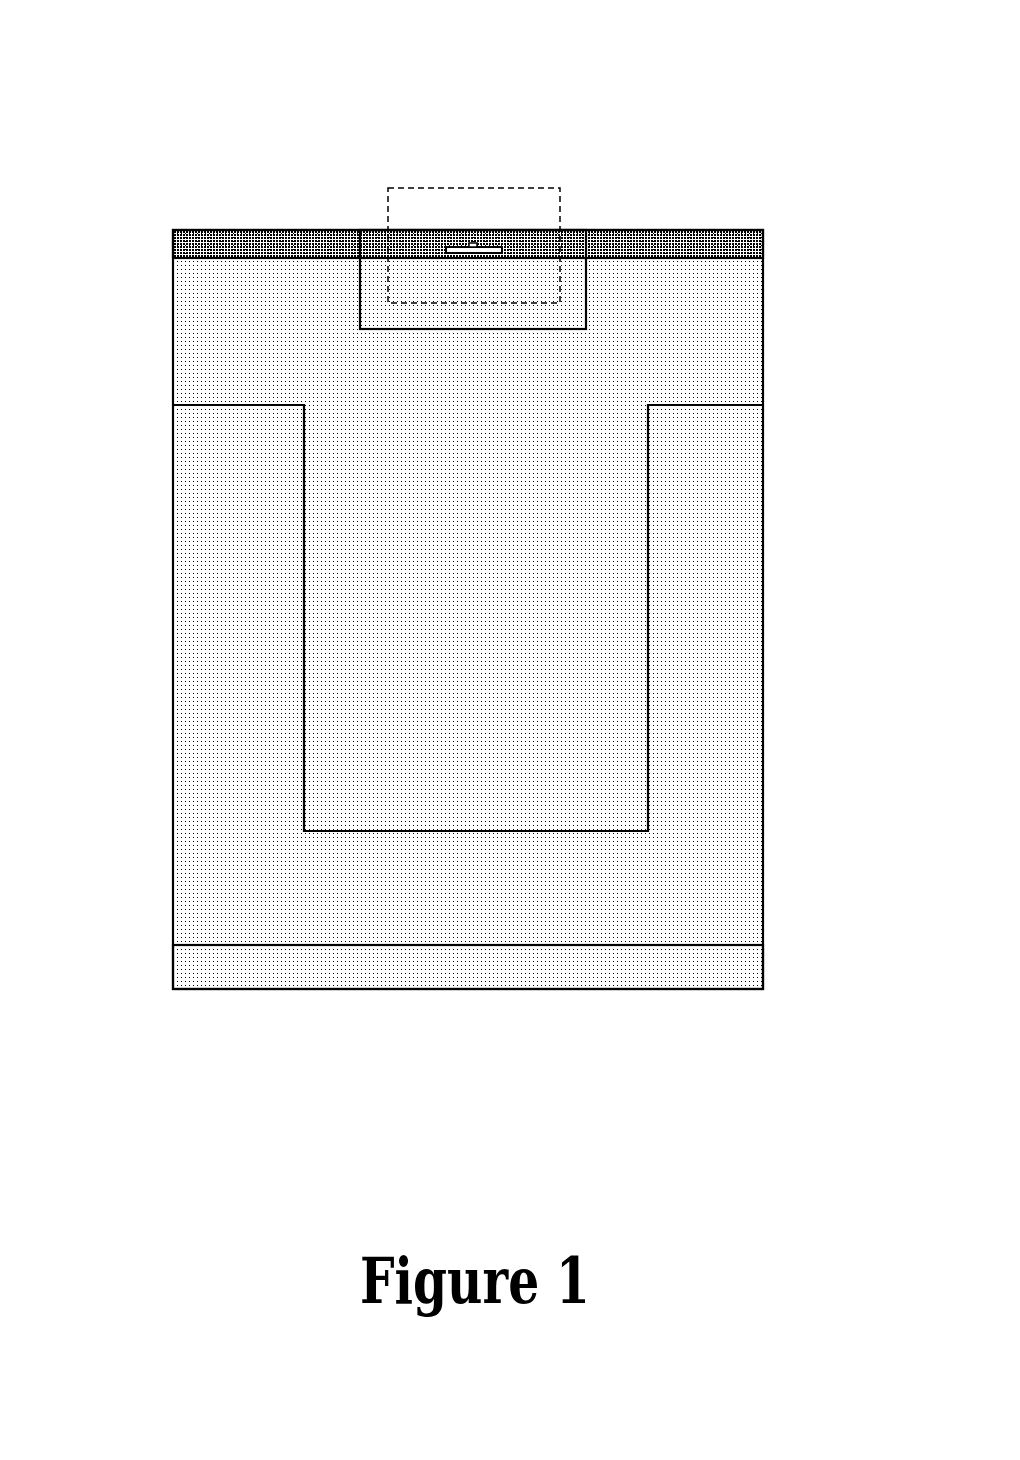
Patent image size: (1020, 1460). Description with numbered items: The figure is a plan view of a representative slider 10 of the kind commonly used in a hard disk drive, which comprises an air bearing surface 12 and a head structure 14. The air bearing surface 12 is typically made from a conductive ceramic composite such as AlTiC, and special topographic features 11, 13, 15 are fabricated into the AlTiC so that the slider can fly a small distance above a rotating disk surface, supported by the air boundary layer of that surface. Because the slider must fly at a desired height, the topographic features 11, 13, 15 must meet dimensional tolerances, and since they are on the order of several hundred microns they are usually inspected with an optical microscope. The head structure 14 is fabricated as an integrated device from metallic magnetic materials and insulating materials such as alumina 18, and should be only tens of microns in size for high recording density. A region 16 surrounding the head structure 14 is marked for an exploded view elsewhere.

The slider 10 is at (710, 58).
The topographic feature 11 is at (765, 964).
The air bearing surface 12 is at (763, 603).
The topographic feature 13 is at (715, 403).
The head structure 14 is at (478, 245).
The topographic feature 15 is at (360, 322).
The region 16 is at (392, 190).
The alumina 18 is at (731, 232).